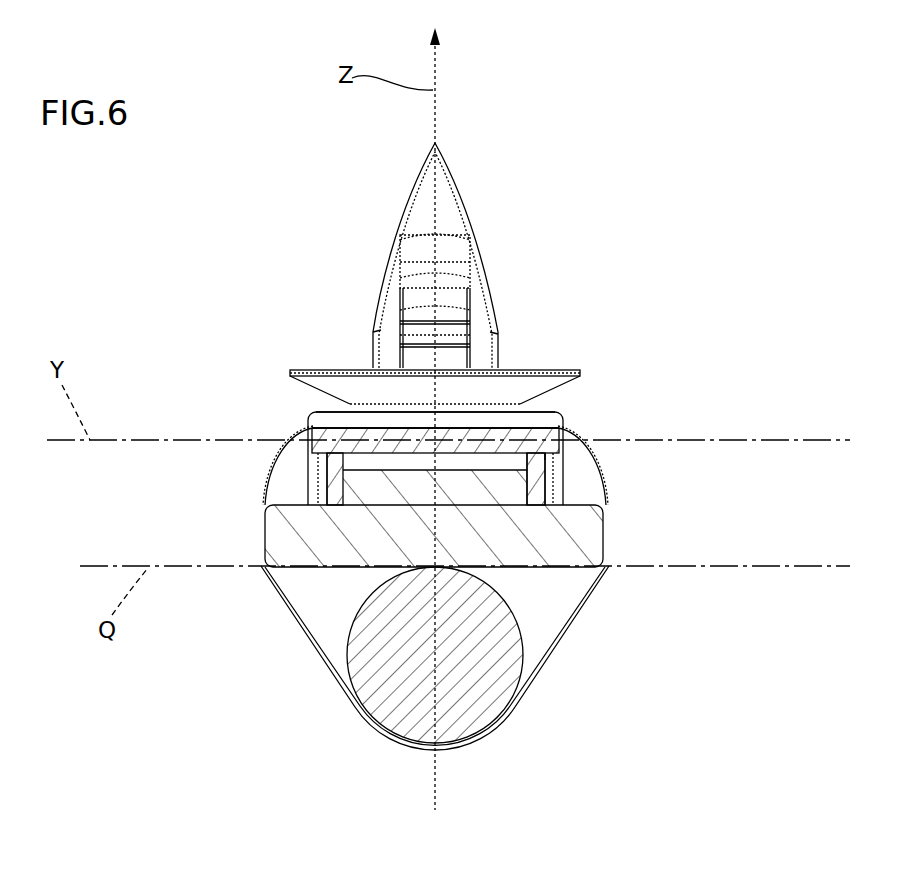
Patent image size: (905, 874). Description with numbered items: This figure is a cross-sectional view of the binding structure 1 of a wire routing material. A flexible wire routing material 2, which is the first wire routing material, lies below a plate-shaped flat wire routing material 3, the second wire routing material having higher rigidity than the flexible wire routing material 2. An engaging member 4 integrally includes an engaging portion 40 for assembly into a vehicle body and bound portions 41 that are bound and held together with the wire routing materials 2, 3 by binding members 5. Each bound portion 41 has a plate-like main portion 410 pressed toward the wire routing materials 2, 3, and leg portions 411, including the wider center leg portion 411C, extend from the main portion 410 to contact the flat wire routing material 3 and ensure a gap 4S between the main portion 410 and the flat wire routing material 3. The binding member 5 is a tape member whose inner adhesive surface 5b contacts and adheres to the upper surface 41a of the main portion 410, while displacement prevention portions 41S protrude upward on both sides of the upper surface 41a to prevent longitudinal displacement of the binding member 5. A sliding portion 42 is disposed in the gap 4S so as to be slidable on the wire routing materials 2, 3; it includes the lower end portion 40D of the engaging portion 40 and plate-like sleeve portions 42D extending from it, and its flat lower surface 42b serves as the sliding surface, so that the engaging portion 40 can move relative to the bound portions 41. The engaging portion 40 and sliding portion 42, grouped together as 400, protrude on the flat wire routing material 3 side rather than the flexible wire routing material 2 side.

The binding structure 1 is at (549, 735).
The flexible wire routing material 2 is at (350, 640).
The flat wire routing material 3 is at (327, 566).
The engaging member 4 is at (462, 148).
The binding member 5 is at (348, 712).
The adhesive surface 5b is at (560, 621).
The sealing member 400 is at (270, 172).
The engaging portion 40 is at (398, 203).
The lower end portion 40D is at (377, 460).
The sliding portion 42 is at (402, 468).
The sleeve portion 42D is at (375, 493).
The lower surface 42b is at (588, 566).
The main portion 410 is at (472, 422).
The bound portion 41 is at (510, 403).
The displacement prevention portion 41S is at (503, 422).
The upper surface 41a is at (350, 410).
The gap 4S is at (541, 459).
The leg portion 411 is at (313, 475).
The center leg portion 411C is at (549, 479).